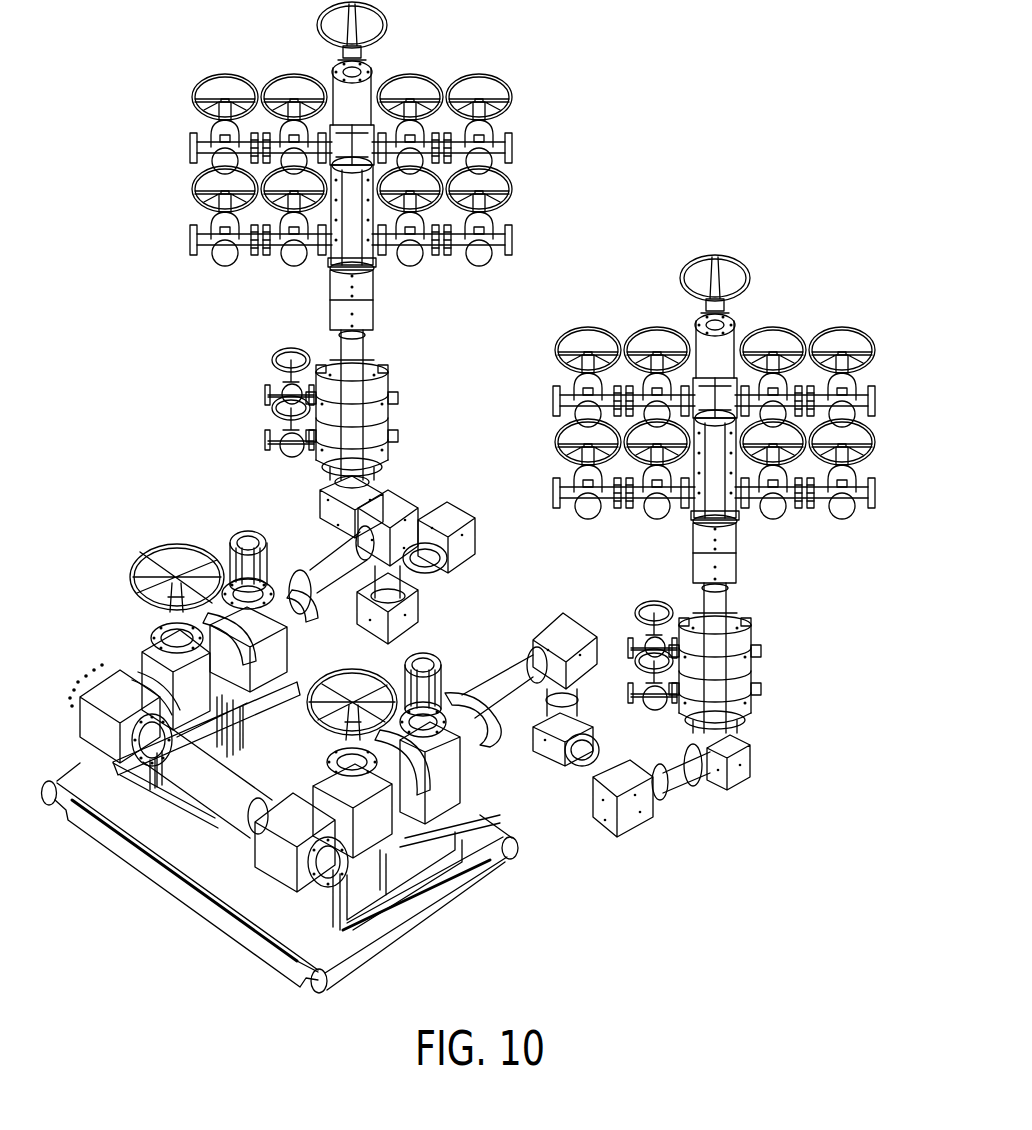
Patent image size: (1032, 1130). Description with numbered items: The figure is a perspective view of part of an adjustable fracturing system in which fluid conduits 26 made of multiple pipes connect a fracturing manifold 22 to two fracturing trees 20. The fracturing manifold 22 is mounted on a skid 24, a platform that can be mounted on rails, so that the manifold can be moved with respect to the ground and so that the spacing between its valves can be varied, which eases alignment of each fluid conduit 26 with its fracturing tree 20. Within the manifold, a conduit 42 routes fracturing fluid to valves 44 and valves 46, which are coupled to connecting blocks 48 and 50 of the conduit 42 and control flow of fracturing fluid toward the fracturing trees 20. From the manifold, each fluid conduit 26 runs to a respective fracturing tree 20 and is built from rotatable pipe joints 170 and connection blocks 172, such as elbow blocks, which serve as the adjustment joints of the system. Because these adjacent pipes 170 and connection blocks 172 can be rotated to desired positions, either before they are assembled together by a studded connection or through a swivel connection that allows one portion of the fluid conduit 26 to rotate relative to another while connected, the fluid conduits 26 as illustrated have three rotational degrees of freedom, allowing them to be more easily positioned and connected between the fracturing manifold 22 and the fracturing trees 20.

The fracturing tree 20 is at (340, 106).
The fracturing manifold 22 is at (247, 883).
The skid 24 is at (110, 843).
The fluid conduit 26 is at (455, 607).
The conduit 42 is at (214, 793).
The valve 44 is at (460, 728).
The valve 46 is at (220, 617).
The connecting block 48 is at (335, 880).
The connecting block 50 is at (92, 697).
The rotatable pipe joint 170 is at (353, 200).
The connection block 172 is at (340, 290).